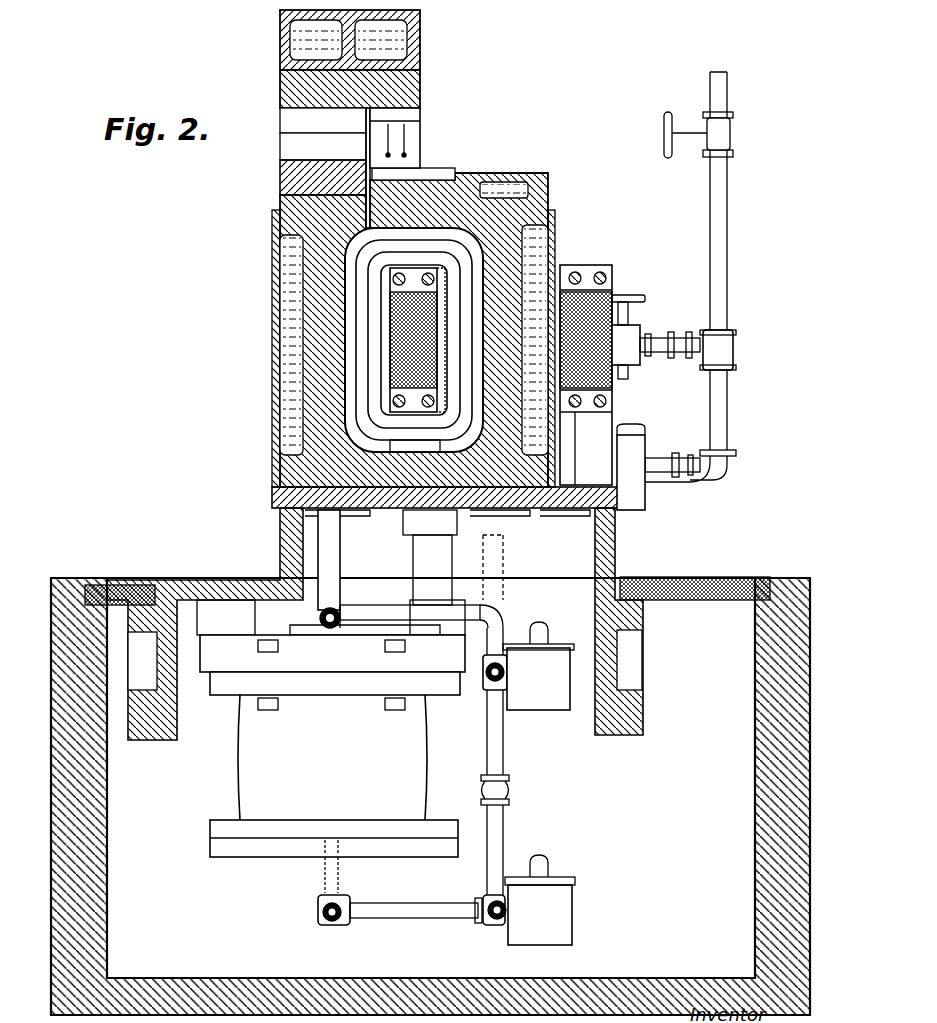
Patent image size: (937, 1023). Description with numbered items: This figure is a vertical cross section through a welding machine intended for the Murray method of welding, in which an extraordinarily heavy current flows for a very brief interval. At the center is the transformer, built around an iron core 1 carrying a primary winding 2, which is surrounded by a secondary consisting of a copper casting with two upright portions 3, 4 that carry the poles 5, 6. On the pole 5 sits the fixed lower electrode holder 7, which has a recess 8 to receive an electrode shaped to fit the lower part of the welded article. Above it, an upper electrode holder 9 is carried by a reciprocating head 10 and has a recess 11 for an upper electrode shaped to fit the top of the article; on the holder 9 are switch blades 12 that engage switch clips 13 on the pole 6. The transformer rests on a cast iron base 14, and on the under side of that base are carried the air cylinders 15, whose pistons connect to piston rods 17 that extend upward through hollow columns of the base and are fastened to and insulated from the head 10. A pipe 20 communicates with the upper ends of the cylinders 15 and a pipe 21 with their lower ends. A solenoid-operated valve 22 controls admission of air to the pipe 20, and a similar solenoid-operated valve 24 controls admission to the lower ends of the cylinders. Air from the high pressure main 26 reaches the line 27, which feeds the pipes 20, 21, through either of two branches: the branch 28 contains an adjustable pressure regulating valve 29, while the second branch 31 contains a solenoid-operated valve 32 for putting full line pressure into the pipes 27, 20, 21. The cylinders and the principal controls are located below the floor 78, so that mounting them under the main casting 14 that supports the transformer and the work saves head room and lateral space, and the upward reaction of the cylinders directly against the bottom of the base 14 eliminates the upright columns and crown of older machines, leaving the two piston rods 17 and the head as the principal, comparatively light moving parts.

The iron core 1 is at (618, 305).
The primary winding 2 is at (482, 262).
The upright portion 3 is at (320, 270).
The upright portion 4 is at (520, 290).
The pole 5 is at (320, 212).
The pole 6 is at (415, 200).
The fixed lower electrode holder 7 is at (292, 181).
The recess 8 is at (292, 148).
The upper electrode holder 9 is at (285, 78).
The reciprocating head 10 is at (286, 25).
The recess 11 is at (290, 128).
The switch blades 12 is at (412, 112).
The switch clips 13 is at (412, 145).
The cast iron base 14 is at (617, 535).
The air cylinder 15 is at (331, 746).
The piston rod 17 is at (341, 552).
The pipe 20 is at (483, 688).
The pipe 21 is at (488, 925).
The solenoid-operated valve 22 is at (628, 750).
The solenoid-operated valve 24 is at (540, 900).
The high pressure main 26 is at (728, 238).
The line 27 is at (508, 610).
The branch 28 is at (735, 340).
The adjustable pressure regulating valve 29 is at (640, 338).
The branch 31 is at (692, 458).
The solenoid-operated valve 32 is at (647, 500).
The floor 78 is at (112, 585).